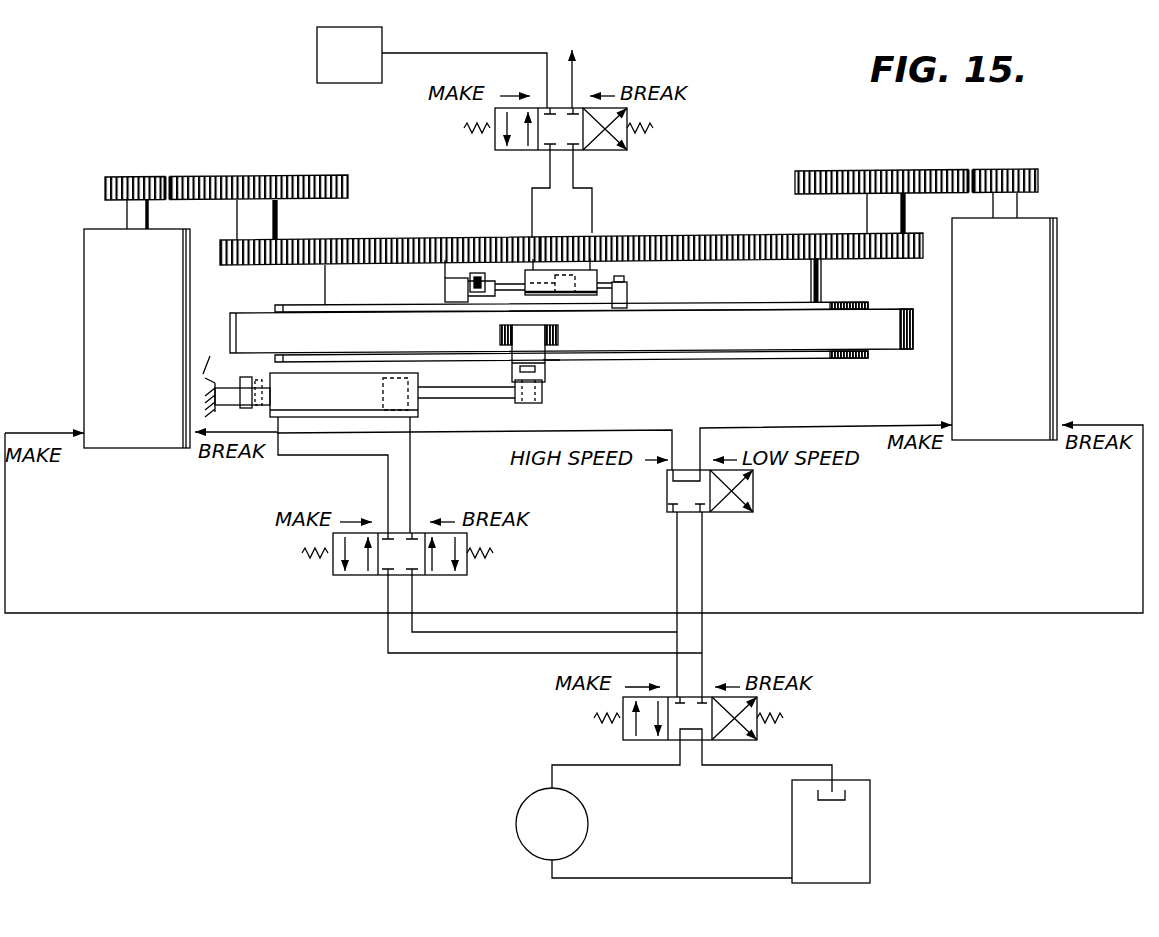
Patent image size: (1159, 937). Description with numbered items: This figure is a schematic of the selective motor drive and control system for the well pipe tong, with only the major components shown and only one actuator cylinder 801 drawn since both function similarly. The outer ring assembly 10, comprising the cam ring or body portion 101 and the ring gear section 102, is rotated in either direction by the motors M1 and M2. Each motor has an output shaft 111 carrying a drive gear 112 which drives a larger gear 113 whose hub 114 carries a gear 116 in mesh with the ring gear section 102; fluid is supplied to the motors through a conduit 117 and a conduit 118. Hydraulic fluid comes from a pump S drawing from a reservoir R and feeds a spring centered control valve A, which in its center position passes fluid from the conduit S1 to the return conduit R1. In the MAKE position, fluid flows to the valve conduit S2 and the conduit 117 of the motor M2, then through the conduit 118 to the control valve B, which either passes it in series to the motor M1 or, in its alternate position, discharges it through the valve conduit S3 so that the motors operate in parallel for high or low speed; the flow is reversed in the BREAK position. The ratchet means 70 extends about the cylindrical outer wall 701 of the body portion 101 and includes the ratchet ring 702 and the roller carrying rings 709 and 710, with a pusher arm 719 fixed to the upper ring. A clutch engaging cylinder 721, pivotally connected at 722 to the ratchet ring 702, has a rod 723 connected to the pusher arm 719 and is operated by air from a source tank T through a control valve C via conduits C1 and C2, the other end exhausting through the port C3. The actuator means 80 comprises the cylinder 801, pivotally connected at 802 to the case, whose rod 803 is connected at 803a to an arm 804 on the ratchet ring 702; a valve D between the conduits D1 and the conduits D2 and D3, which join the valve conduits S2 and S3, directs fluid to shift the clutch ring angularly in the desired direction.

The outer ring assembly 10 is at (596, 230).
The cam ring or body portion 101 is at (446, 238).
The ring gear section 102 is at (746, 236).
The output shaft 111 is at (128, 212).
The drive gear 112 is at (128, 176).
The larger gear 113 is at (248, 184).
The hub 114 is at (238, 216).
The gear 116 is at (282, 242).
The conduit 117 is at (6, 472).
The conduit 118 is at (1140, 460).
The ratchet means 70 is at (811, 363).
The cylindrical outer wall 701 is at (681, 276).
The ratchet ring 702 is at (758, 338).
The upper roller carrying ring 709 is at (366, 306).
The lower roller carrying ring 710 is at (563, 361).
The pusher arm 719 is at (447, 293).
The cylinder 721 is at (585, 296).
The pivotal connection 722 is at (628, 296).
The rod 723 is at (510, 286).
The actuator means 80 is at (304, 366).
The cylinder 801 is at (324, 390).
The pivotal connection 802 is at (248, 376).
The rod 803 is at (472, 396).
The pivotal connection 803a is at (543, 395).
The arm 804 is at (518, 346).
The source tank T is at (349, 55).
The control valve C is at (480, 146).
The conduit C1 is at (550, 163).
The conduit C2 is at (573, 173).
The exhaust port C3 is at (575, 72).
The motor M1 is at (1057, 277).
The motor M2 is at (83, 325).
The valve D is at (470, 571).
The conduits D1 is at (341, 460).
The conduit D2 is at (412, 596).
The conduit D3 is at (388, 596).
The control valve B is at (755, 506).
The valve conduit S2 is at (677, 572).
The valve conduit S3 is at (703, 580).
The control valve A is at (762, 732).
The conduit S1 is at (634, 766).
The return conduit R1 is at (745, 766).
The pump S is at (654, 833).
The reservoir R is at (831, 831).